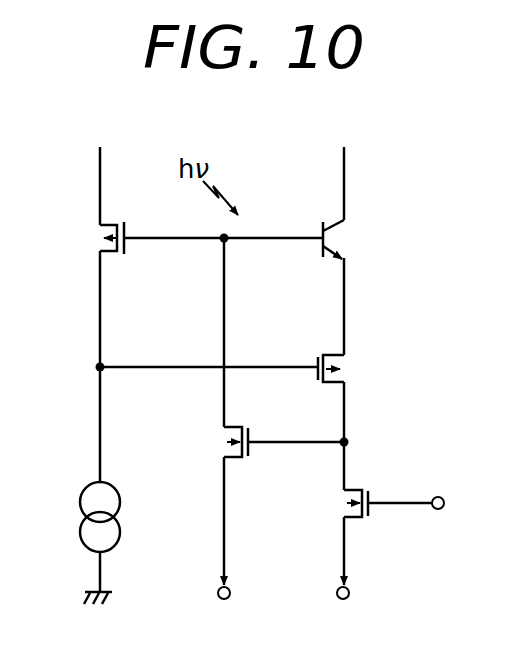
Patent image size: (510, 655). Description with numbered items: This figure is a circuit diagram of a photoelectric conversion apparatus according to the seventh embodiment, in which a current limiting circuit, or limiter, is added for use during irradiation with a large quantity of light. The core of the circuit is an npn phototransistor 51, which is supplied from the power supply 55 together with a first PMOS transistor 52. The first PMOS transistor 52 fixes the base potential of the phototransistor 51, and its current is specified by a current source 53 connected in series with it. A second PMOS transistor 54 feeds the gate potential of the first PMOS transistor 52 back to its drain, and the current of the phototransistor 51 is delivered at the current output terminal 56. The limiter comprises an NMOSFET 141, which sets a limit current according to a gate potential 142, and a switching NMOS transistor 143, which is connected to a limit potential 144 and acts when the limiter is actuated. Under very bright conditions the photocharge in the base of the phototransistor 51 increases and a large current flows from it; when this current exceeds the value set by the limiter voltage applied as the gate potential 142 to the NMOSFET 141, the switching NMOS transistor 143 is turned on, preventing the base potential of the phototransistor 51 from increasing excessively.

The power supply 55 is at (102, 145).
The PMOS transistor MP1 52 is at (90, 221).
The npn phototransistor Q1 51 is at (350, 226).
The PMOS transistor MP2 54 is at (348, 355).
The switching NMOS transistor MN2 143 is at (222, 428).
The NMOSFET MN1 141 is at (342, 490).
The gate potential VL 142 is at (438, 496).
The current source 53 is at (82, 484).
The limit potential VLIM 144 is at (231, 592).
The current output terminal Iout 56 is at (350, 592).